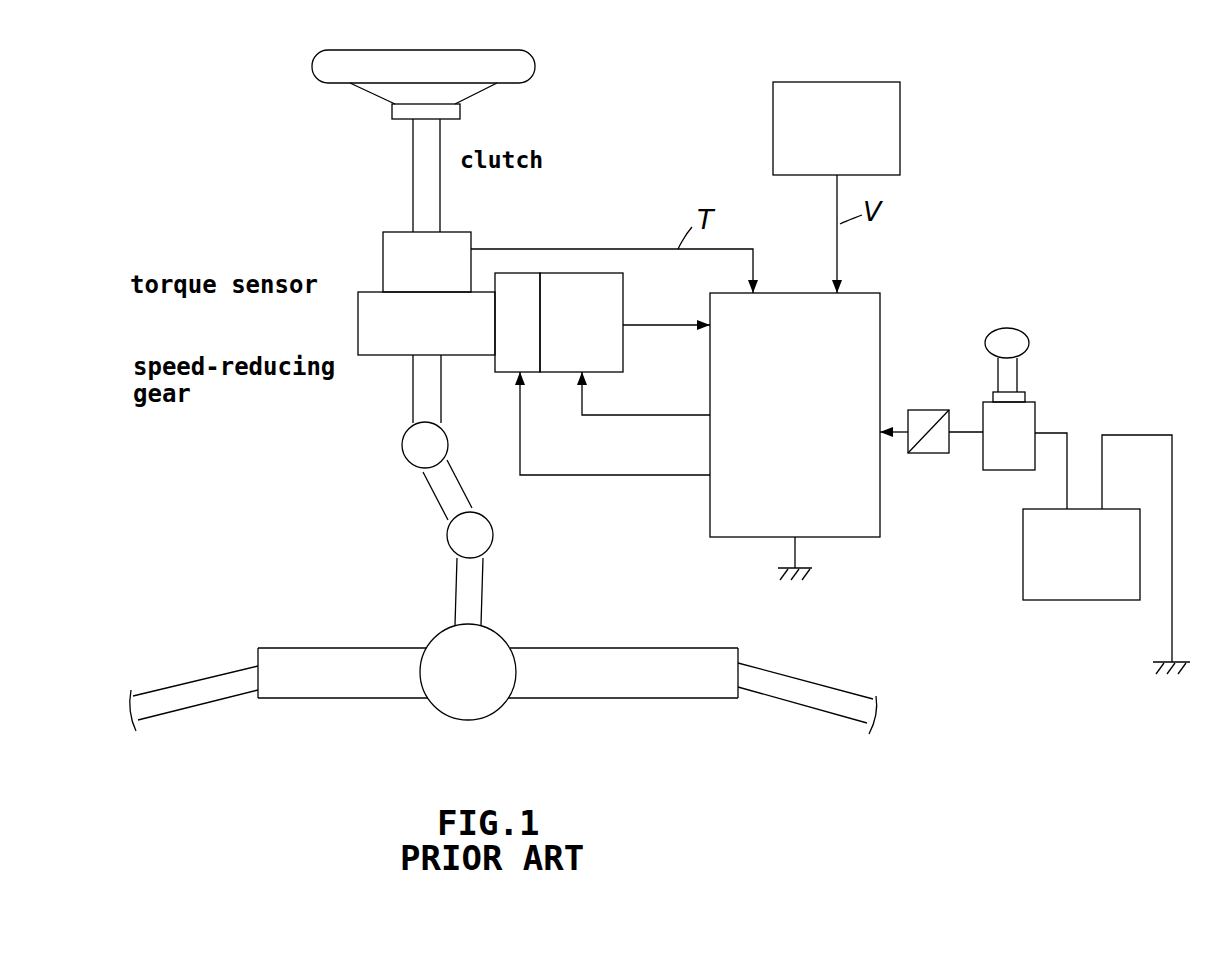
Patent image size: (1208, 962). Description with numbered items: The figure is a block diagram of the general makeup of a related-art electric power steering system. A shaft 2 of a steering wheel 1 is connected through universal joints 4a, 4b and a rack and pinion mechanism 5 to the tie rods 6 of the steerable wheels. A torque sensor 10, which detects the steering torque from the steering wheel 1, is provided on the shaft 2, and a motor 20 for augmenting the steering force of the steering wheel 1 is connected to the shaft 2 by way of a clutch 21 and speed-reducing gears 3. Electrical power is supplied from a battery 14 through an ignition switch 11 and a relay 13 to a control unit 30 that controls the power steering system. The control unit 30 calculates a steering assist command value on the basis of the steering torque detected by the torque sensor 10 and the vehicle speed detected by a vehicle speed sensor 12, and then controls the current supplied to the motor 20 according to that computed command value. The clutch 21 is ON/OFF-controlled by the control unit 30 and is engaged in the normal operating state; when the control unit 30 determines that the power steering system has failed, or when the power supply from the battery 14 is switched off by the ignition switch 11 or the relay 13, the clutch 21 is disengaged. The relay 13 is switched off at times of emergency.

The steering wheel 1 is at (528, 64).
The shaft 2 is at (413, 177).
The speed-reducing gears 3 is at (358, 324).
The universal joint 4a is at (403, 442).
The universal joint 4b is at (447, 537).
The rack and pinion mechanism 5 is at (520, 625).
The tie rods 6 is at (815, 690).
The torque sensor 10 is at (383, 260).
The ignition switch 11 is at (1030, 342).
The vehicle speed sensor 12 is at (870, 82).
The relay 13 is at (930, 455).
The battery 14 is at (1060, 602).
The motor 20 is at (587, 273).
The clutch 21 is at (517, 273).
The control unit 30 is at (868, 293).